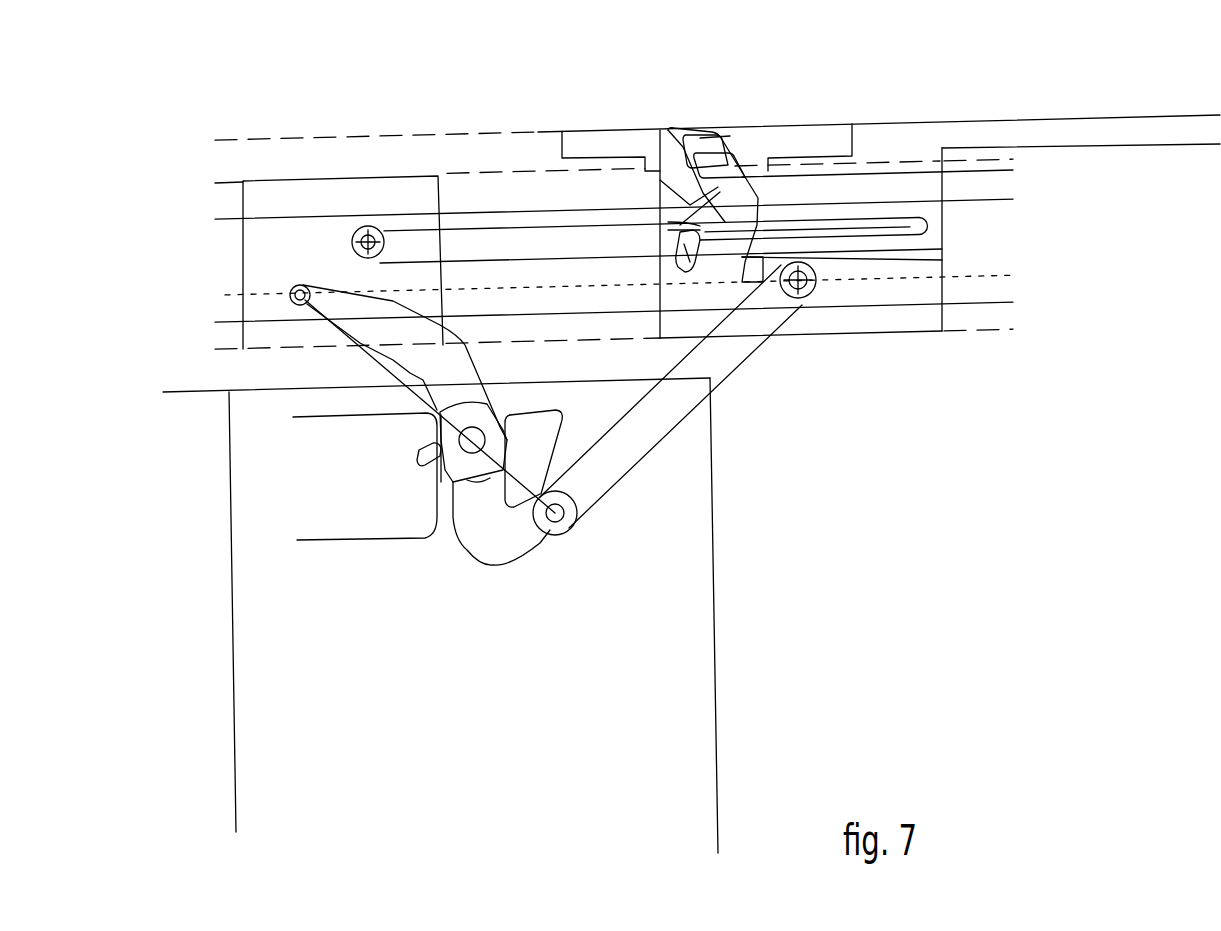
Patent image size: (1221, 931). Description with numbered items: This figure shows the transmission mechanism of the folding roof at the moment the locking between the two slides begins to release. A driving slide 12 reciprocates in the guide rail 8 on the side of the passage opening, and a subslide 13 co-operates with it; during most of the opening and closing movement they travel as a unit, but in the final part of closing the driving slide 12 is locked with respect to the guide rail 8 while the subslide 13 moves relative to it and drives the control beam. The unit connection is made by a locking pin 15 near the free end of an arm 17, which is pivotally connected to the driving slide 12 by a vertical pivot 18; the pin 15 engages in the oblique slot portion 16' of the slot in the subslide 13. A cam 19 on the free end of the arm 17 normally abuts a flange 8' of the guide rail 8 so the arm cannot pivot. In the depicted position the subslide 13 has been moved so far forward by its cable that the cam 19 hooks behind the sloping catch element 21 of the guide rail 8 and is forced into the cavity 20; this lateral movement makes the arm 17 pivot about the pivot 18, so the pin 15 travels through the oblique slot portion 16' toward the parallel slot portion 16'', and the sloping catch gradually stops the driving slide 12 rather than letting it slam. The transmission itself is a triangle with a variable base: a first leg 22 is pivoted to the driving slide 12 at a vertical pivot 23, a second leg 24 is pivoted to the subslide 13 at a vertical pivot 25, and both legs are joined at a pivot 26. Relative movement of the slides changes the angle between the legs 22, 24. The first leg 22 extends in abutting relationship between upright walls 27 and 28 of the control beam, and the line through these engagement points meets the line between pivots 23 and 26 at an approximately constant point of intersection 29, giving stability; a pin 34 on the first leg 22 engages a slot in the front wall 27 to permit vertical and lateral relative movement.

The guide rail 8 is at (691, 454).
The flange 8' is at (977, 107).
The driving slide 12 is at (263, 232).
The subslide 13 is at (888, 318).
The pin 15 is at (672, 118).
The oblique slot portion 16' is at (640, 154).
The parallel slot portion 16'' is at (814, 138).
The arm 17 is at (500, 242).
The vertical pivot 18 is at (369, 244).
The cam 19 is at (707, 157).
The cavity 20 is at (716, 140).
The catch element 21 is at (690, 160).
The first leg 22 is at (327, 300).
The vertical pivot 23 is at (300, 285).
The second leg 24 is at (643, 445).
The vertical pivot 25 is at (799, 290).
The pivot 26 is at (558, 535).
The front upright wall 27 is at (433, 520).
The upright wall 28 is at (513, 490).
The point of intersection 29 is at (472, 452).
The pin 34 is at (428, 468).